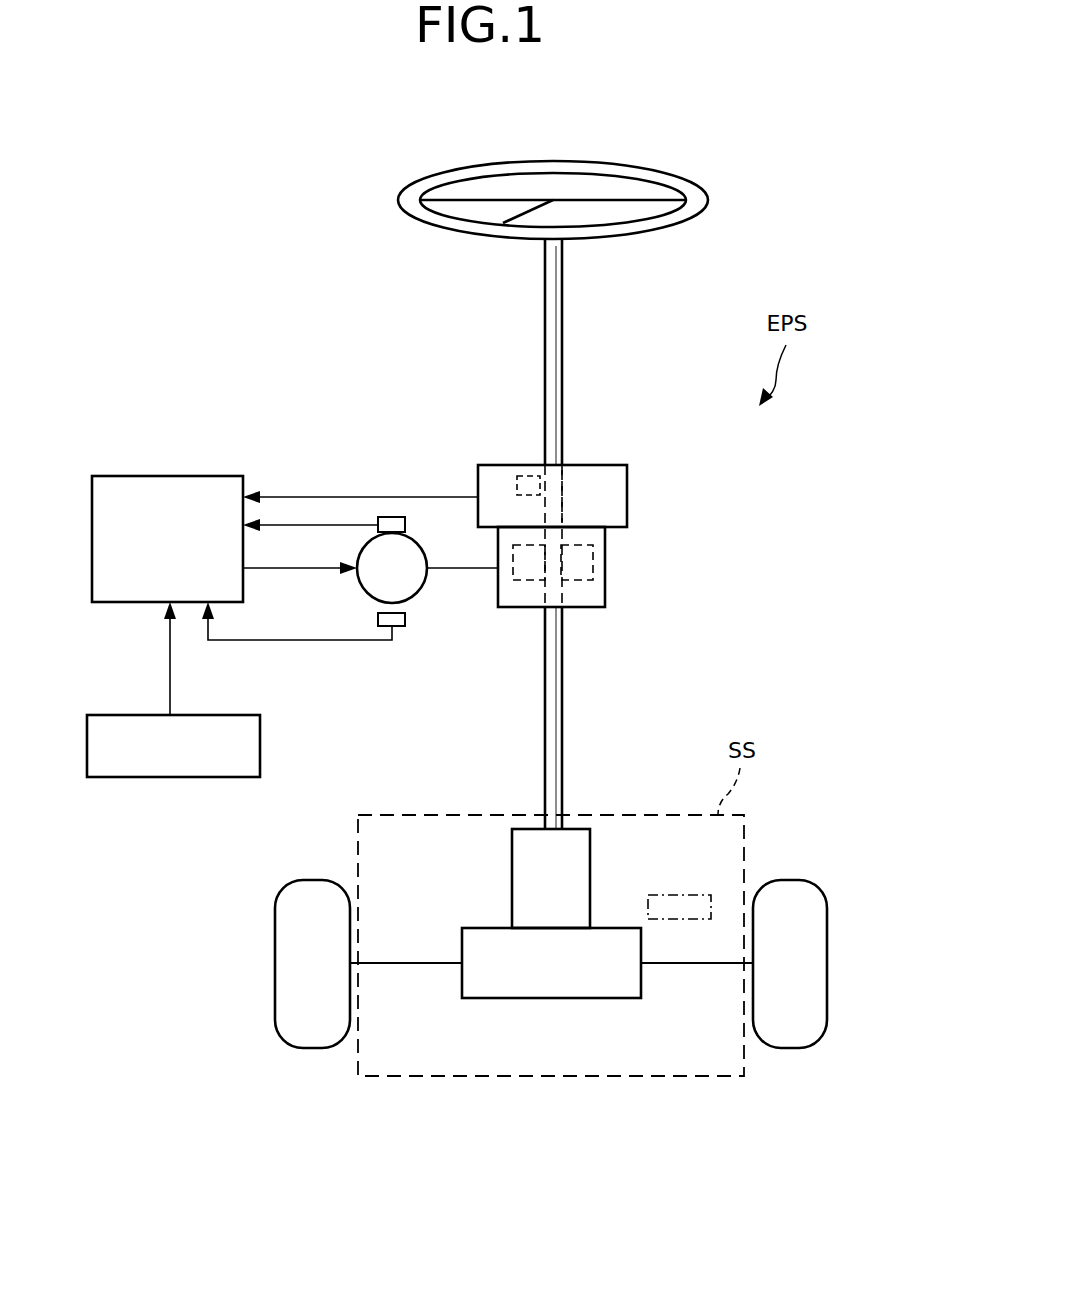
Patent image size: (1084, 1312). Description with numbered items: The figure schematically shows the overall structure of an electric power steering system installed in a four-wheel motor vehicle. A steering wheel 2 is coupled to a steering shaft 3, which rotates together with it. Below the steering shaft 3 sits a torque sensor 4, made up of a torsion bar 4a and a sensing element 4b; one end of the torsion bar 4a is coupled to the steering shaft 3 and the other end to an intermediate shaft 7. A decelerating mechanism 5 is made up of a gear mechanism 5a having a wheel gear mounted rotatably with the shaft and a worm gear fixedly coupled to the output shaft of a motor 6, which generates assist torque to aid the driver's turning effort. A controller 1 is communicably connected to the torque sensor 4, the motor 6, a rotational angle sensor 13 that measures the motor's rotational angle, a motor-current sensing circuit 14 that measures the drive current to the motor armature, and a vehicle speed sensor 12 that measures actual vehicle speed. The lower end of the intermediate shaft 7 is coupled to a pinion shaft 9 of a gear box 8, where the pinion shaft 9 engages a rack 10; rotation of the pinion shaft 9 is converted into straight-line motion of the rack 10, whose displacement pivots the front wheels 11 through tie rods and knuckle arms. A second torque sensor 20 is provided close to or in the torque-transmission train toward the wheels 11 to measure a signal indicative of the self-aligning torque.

The controller 1 is at (170, 476).
The steering wheel 2 is at (708, 200).
The steering shaft 3 is at (564, 360).
The torque sensor 4 is at (630, 498).
The torsion bar 4a is at (563, 497).
The sensing element 4b is at (522, 476).
The decelerating mechanism 5 is at (610, 573).
The gear mechanism 5a is at (578, 580).
The motor 6 is at (420, 590).
The intermediate shaft 7 is at (564, 718).
The gear box 8 is at (621, 895).
The pinion shaft 9 is at (579, 829).
The rack 10 is at (553, 999).
The wheel 11 is at (312, 1049).
The vehicle speed sensor 12 is at (260, 745).
The rotational angle sensor 13 is at (390, 517).
The motor-current sensing circuit 14 is at (398, 627).
The torque sensor 20 is at (692, 895).